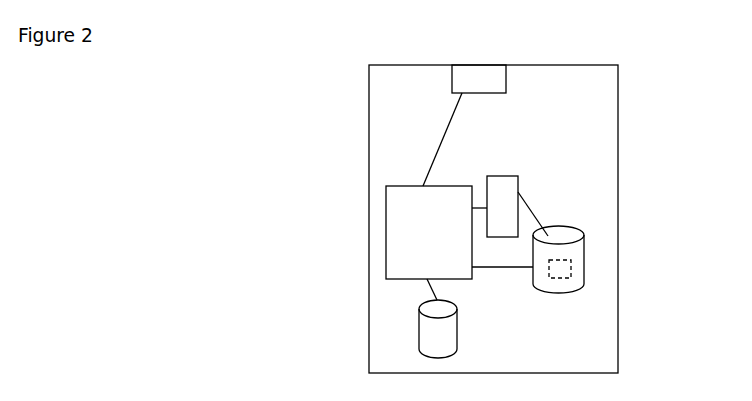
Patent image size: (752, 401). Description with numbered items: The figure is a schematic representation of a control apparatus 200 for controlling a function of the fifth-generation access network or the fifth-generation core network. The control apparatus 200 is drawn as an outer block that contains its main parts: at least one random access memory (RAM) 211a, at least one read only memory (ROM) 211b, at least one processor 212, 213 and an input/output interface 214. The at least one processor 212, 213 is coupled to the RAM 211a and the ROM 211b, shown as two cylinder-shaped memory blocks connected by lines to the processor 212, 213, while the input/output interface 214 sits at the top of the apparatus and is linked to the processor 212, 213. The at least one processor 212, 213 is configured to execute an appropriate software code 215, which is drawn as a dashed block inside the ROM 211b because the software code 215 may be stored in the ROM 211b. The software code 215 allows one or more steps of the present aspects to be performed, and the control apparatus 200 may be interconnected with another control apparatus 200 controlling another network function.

The control apparatus 200 is at (362, 63).
The input/output interface 214 is at (483, 79).
The processor 213 is at (496, 192).
The processor 212 is at (386, 253).
The random access memory (RAM) 211a is at (419, 329).
The read only memory (ROM) 211b is at (584, 283).
The software code 215 is at (570, 261).